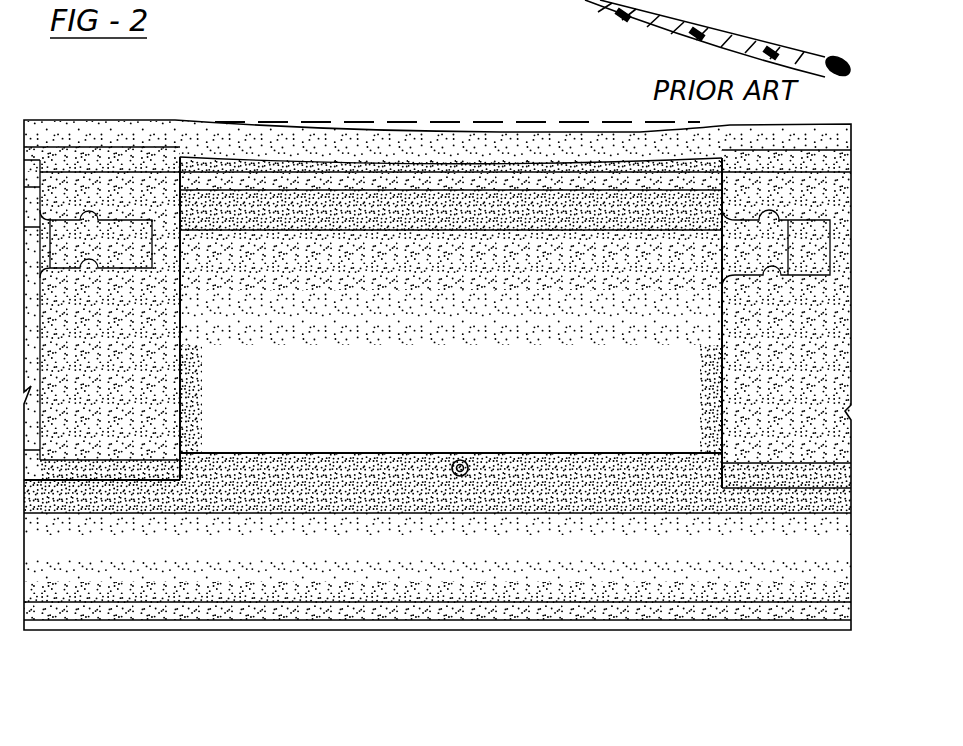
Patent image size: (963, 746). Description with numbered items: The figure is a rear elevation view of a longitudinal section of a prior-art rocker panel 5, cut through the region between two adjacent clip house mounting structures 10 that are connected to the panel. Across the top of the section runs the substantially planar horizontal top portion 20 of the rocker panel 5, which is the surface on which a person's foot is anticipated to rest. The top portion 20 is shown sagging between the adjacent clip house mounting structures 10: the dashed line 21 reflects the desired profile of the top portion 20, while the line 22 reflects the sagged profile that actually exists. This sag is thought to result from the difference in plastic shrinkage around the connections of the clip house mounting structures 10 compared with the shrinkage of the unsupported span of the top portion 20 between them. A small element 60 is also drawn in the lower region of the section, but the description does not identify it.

The rocker panel 5 is at (252, 78).
The clip house mounting structure 10 is at (147, 402).
The top portion 20 is at (455, 152).
The dashed line 21 is at (358, 120).
The line 22 is at (535, 137).
The fastener 60 is at (392, 470).